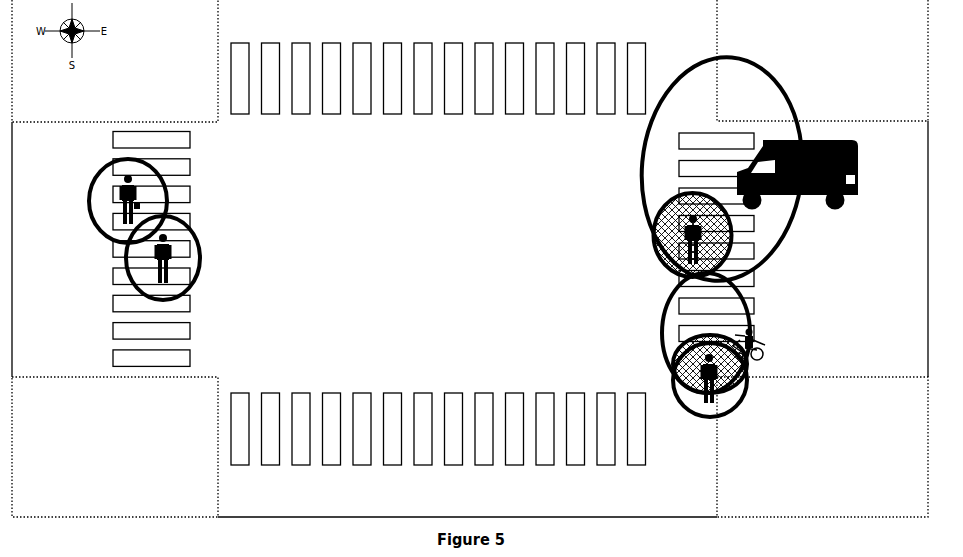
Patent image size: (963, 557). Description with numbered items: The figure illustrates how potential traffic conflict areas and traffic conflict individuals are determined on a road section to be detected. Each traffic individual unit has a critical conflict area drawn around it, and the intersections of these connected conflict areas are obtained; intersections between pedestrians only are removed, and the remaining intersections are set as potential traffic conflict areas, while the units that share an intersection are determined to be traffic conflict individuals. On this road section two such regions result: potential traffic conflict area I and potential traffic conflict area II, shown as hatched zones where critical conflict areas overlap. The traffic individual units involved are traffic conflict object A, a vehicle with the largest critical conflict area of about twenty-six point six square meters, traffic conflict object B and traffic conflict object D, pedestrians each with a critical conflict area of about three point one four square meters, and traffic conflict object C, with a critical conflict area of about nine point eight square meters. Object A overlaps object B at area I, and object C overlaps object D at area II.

The traffic conflict object A is at (795, 213).
The traffic conflict object B is at (693, 236).
The traffic conflict object C is at (837, 311).
The traffic conflict object D is at (695, 370).
The potential traffic conflict area I is at (663, 219).
The potential traffic conflict area II is at (680, 378).